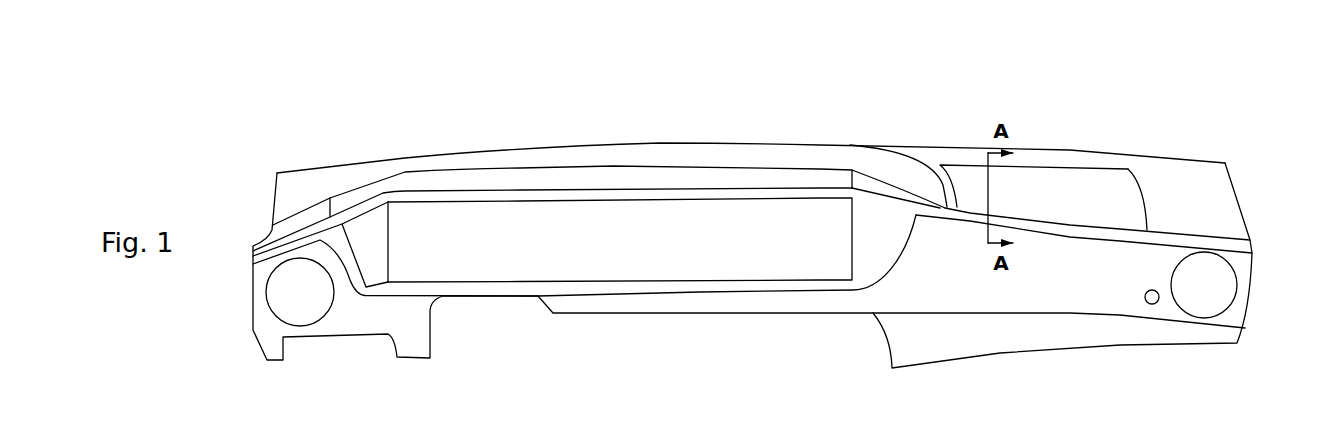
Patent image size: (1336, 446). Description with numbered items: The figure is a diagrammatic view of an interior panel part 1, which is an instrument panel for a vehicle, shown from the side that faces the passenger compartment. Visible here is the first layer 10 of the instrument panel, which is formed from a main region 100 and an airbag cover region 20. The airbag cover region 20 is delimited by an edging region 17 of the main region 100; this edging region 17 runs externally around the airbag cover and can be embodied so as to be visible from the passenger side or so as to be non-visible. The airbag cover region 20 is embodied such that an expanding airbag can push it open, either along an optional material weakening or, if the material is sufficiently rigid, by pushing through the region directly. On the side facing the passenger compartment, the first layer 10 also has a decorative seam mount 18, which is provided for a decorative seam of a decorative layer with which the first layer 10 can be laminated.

The interior panel part 1 is at (790, 136).
The main region 100 is at (892, 136).
The airbag cover region 20 is at (1014, 181).
The edging region 17 is at (1102, 168).
The first layer 10 is at (1152, 173).
The decorative seam mount 18 is at (1213, 241).